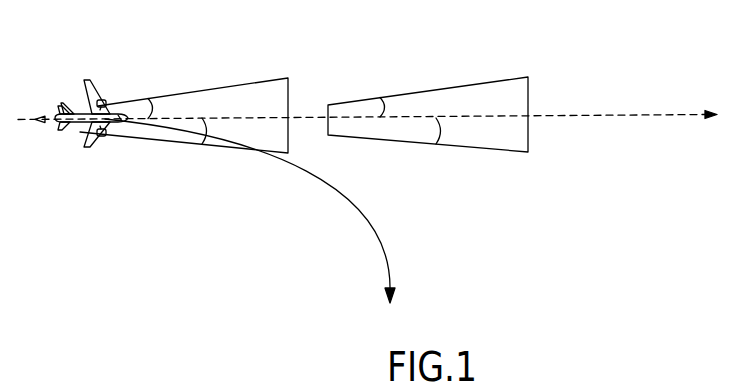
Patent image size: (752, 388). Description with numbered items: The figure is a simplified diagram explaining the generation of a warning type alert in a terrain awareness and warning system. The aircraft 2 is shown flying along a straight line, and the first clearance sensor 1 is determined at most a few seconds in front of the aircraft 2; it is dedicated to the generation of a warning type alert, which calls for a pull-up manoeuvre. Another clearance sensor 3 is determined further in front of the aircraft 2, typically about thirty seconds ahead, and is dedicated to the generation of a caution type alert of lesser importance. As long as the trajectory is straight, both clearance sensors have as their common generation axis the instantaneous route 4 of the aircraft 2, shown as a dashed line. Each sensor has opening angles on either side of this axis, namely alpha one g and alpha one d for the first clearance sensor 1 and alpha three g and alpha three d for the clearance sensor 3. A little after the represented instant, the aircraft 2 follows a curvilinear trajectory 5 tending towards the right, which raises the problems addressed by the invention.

The first clearance sensor 1 is at (230, 86).
The aircraft 2 is at (72, 126).
The clearance sensor 3 is at (447, 88).
The instantaneous route 4 is at (642, 114).
The curvilinear trajectory 5 is at (365, 227).